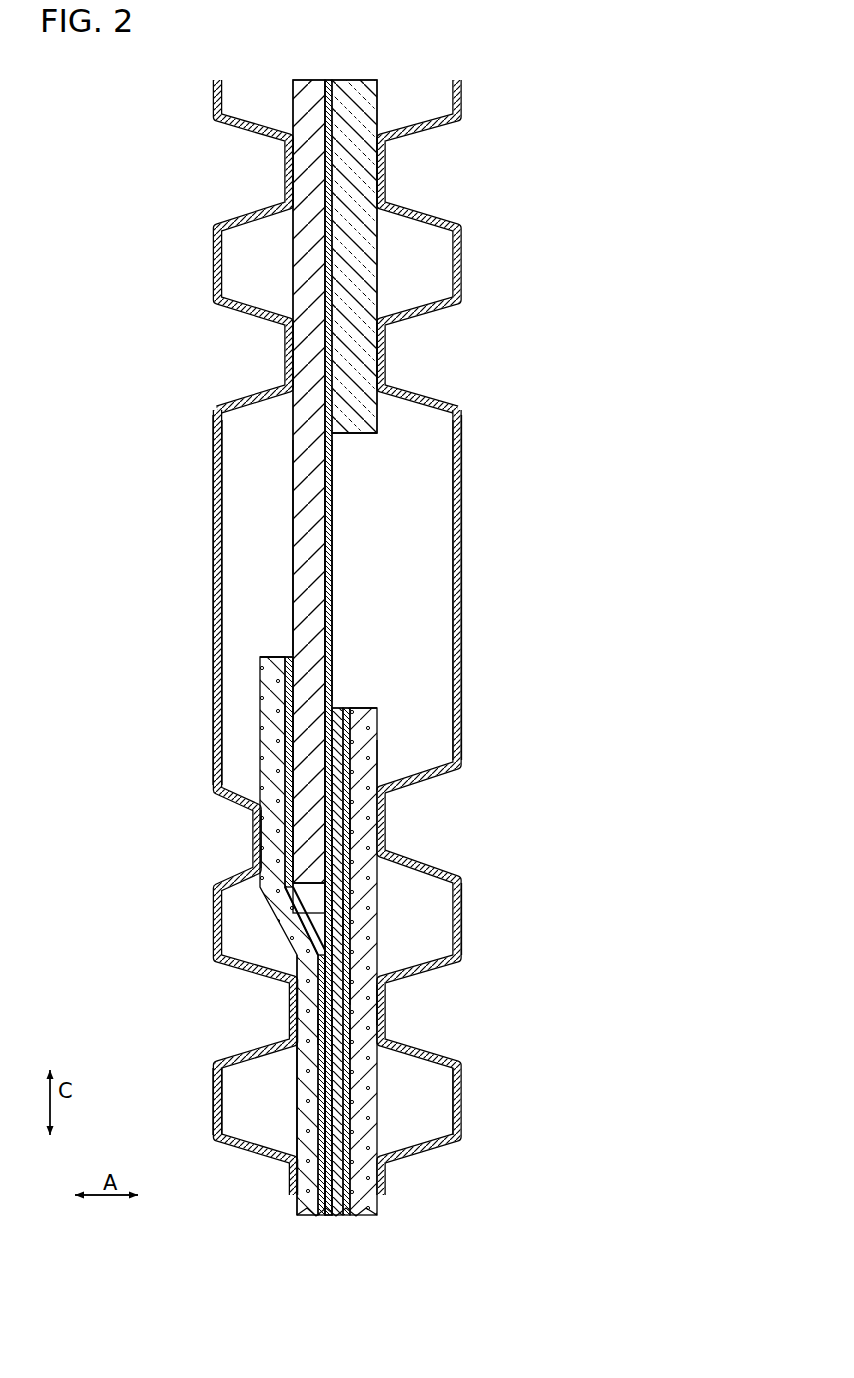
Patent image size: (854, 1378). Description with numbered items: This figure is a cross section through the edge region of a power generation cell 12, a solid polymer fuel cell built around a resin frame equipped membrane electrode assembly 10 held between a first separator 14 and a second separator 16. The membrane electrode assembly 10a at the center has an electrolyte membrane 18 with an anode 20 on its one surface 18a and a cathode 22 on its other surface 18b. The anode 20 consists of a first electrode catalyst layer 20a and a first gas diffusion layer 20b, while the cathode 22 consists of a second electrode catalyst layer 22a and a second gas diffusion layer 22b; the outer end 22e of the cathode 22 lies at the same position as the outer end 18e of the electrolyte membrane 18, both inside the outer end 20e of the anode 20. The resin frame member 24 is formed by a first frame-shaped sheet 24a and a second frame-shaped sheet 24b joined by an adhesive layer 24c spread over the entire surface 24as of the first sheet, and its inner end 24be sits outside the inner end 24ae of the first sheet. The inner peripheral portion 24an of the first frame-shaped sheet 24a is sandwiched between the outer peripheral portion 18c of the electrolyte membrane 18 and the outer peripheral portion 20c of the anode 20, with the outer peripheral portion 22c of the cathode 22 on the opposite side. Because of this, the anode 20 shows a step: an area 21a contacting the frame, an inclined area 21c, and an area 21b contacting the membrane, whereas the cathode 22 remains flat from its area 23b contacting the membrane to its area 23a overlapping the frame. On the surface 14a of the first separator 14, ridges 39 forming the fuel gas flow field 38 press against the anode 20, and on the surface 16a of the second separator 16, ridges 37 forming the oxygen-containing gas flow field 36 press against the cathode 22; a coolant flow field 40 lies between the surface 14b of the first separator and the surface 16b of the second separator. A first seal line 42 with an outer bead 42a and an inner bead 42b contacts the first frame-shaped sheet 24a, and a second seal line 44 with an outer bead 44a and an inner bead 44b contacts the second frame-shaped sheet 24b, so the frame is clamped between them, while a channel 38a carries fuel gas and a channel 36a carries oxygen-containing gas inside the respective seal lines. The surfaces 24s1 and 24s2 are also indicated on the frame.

The resin frame equipped membrane electrode assembly 10 is at (248, 622).
The membrane electrode assembly 10a is at (296, 1085).
The power generation cell 12 is at (127, 80).
The first separator 14 is at (212, 708).
The surface of first separator 14a is at (228, 1092).
The surface of first separator 14b is at (212, 441).
The second separator 16 is at (463, 716).
The surface of second separator 16a is at (449, 885).
The surface of second separator 16b is at (463, 441).
The electrolyte membrane 18 is at (337, 905).
The one surface of electrolyte membrane 18a is at (347, 918).
The another surface of electrolyte membrane 18b is at (345, 915).
The outer peripheral portion of electrolyte membrane 18c is at (337, 750).
The outer end of electrolyte membrane 18e is at (335, 715).
The anode 20 is at (160, 970).
The first electrode catalyst layer 20a is at (296, 990).
The first gas diffusion layer 20b is at (296, 1013).
The outer peripheral portion of anode 20c is at (268, 740).
The outer end of anode 20e is at (265, 657).
The area contacting inner peripheral portion 21a is at (262, 678).
The area contacting electrolyte membrane 21b is at (305, 1176).
The inclined area 21c is at (318, 913).
The cathode 22 is at (515, 995).
The second electrode catalyst layer 22a is at (383, 1013).
The second gas diffusion layer 22b is at (357, 1037).
The outer peripheral portion of cathode 22c is at (380, 765).
The outer end of cathode 22e is at (365, 710).
The area overlapping inner peripheral portion 23a is at (363, 825).
The area contacting electrolyte membrane 23b is at (362, 1090).
The resin frame member 24 is at (382, 250).
The first frame-shaped sheet 24a is at (303, 258).
The second frame-shaped sheet 24b is at (367, 173).
The adhesive layer 24c is at (330, 573).
The inner end of first frame-shaped sheet 24ae is at (300, 890).
The inner peripheral portion of first frame-shaped sheet 24an is at (305, 790).
The surface of first frame-shaped sheet 24as is at (328, 516).
The inner end of second frame-shaped sheet 24be is at (350, 435).
The first surface 24s1 is at (328, 608).
The second surface 24s2 is at (293, 605).
The oxygen-containing gas flow field 36 is at (419, 1101).
The channel 36a is at (430, 595).
The ridges 37 is at (340, 1027).
The fuel gas flow field 38 is at (257, 1101).
The channel 38a is at (240, 524).
The ridges 39 is at (348, 987).
The coolant flow field 40 is at (243, 823).
The first seal line 42 is at (238, 117).
The outer bead 42a is at (297, 157).
The inner bead 42b is at (297, 345).
The second seal line 44 is at (428, 117).
The outer bead 44a is at (378, 177).
The inner bead 44b is at (378, 372).